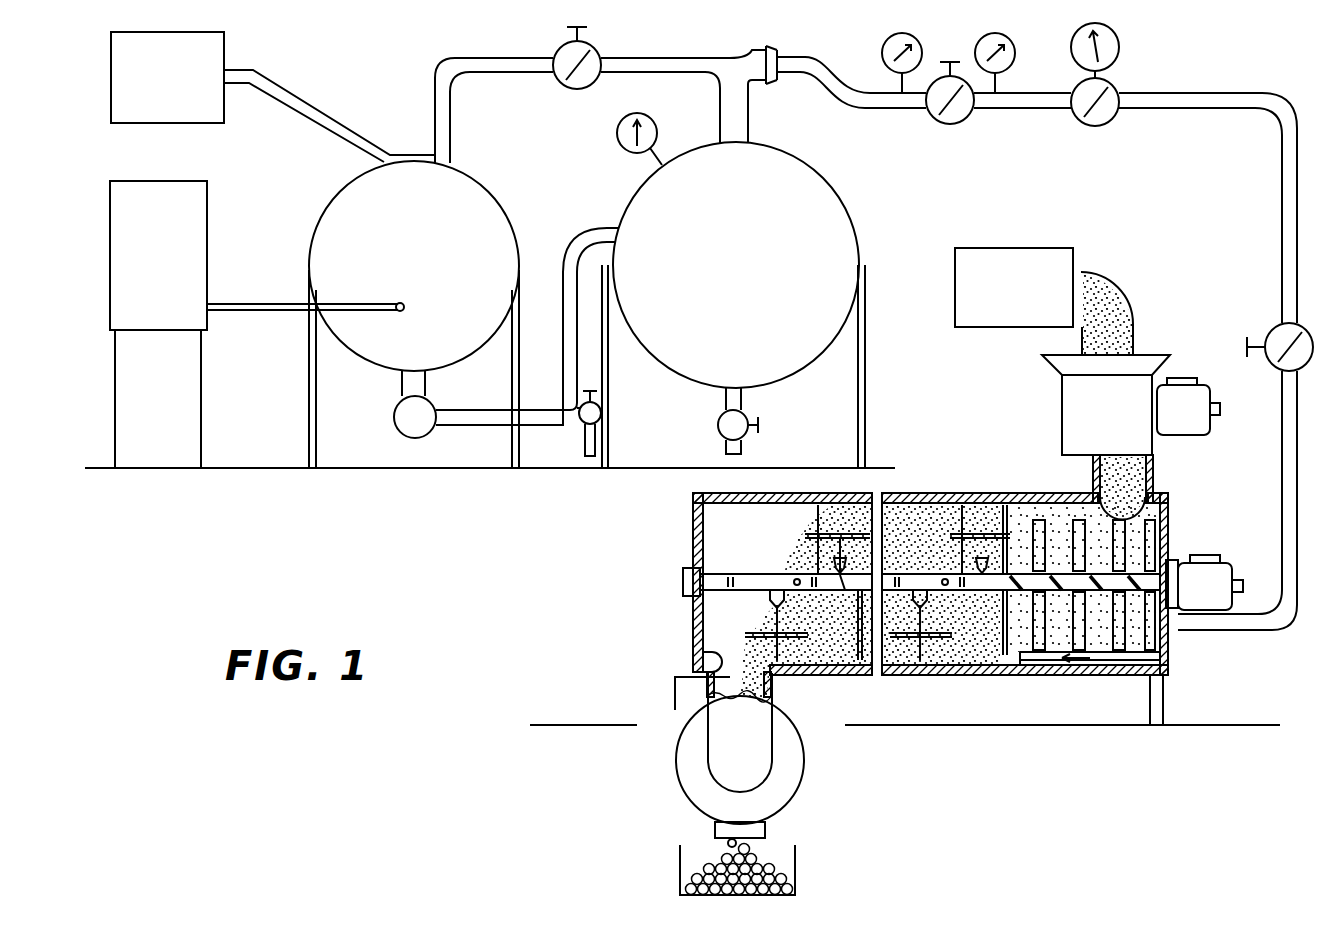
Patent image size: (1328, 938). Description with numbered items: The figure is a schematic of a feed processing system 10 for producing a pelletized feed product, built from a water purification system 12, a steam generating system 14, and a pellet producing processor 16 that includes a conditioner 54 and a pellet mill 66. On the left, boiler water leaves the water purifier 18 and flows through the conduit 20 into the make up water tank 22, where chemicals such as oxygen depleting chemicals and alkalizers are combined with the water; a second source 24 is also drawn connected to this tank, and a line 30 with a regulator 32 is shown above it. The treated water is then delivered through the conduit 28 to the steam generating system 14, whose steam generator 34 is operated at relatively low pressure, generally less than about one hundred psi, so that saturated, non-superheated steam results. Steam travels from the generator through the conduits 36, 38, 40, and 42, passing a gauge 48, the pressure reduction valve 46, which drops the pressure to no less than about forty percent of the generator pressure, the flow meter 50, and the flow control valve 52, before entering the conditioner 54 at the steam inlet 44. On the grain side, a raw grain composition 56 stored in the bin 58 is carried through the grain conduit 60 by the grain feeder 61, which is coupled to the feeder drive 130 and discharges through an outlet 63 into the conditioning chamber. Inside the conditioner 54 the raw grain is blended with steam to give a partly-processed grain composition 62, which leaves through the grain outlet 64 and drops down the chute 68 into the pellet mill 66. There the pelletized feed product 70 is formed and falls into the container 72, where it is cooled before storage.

The feed processing system 10 is at (500, 565).
The water purification system 12 is at (255, 499).
The steam generating system 14 is at (645, 500).
The pellet producing processor 16 is at (680, 797).
The water purifier 18 is at (199, 127).
The conduit 20 is at (318, 105).
The make up water tank 22 is at (400, 294).
The additive source 24 is at (208, 272).
The conduit 28 is at (462, 427).
The pressure line 30 is at (686, 74).
The pressure regulator 32 is at (596, 76).
The steam generator 34 is at (722, 334).
The conduit 36 is at (815, 88).
The conduit 38 is at (1048, 110).
The conduit 40 is at (1212, 93).
The conduit 42 is at (1256, 626).
The steam inlet 44 is at (1172, 628).
The pressure reduction valve 46 is at (932, 118).
The pressure gauge 48 is at (1012, 66).
The flow meter 50 is at (1100, 125).
The flow control valve 52 is at (1275, 370).
The conditioner 54 is at (962, 672).
The raw grain composition 56 is at (1118, 323).
The bin 58 is at (985, 320).
The grain conduit 60 is at (1108, 283).
The grain feeder 61 is at (1091, 421).
The partly-processed grain composition 62 is at (905, 520).
The hopper outlet 63 is at (1142, 482).
The grain outlet 64 is at (712, 660).
The pellet mill 66 is at (795, 786).
The chute 68 is at (765, 735).
The pelletized feed product 70 is at (762, 866).
The container 72 is at (796, 868).
The feeder drive 130 is at (1210, 381).